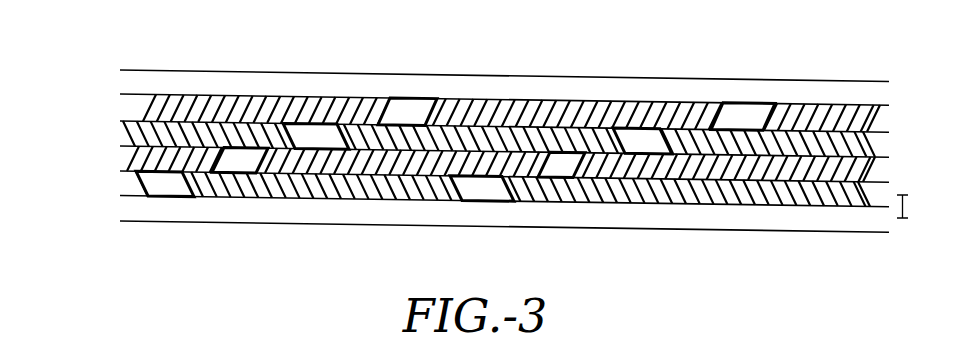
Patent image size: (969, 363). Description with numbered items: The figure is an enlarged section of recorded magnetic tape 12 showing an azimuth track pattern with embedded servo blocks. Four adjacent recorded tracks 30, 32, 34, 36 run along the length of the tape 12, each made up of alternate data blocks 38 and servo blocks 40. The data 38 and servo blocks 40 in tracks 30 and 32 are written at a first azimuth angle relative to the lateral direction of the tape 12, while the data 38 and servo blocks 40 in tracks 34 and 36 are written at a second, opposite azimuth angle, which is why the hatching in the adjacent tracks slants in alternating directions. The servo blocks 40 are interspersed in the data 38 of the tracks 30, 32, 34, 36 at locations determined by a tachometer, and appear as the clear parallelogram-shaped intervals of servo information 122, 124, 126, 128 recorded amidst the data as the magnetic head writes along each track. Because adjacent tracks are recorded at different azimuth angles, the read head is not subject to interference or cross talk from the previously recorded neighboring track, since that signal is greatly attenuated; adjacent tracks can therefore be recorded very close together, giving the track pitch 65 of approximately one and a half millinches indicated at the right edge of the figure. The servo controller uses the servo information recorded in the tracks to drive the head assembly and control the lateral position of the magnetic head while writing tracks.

The tape 12 is at (730, 79).
The track 30 is at (133, 184).
The track 32 is at (133, 136).
The track 34 is at (133, 159).
The track 36 is at (133, 109).
The data blocks 38 is at (290, 198).
The servo blocks 40 is at (398, 100).
The track pitch 65 is at (906, 208).
The interval of servo information 122 is at (483, 201).
The interval of servo information 124 is at (556, 178).
The interval of servo information 126 is at (657, 154).
The interval of servo information 128 is at (752, 131).